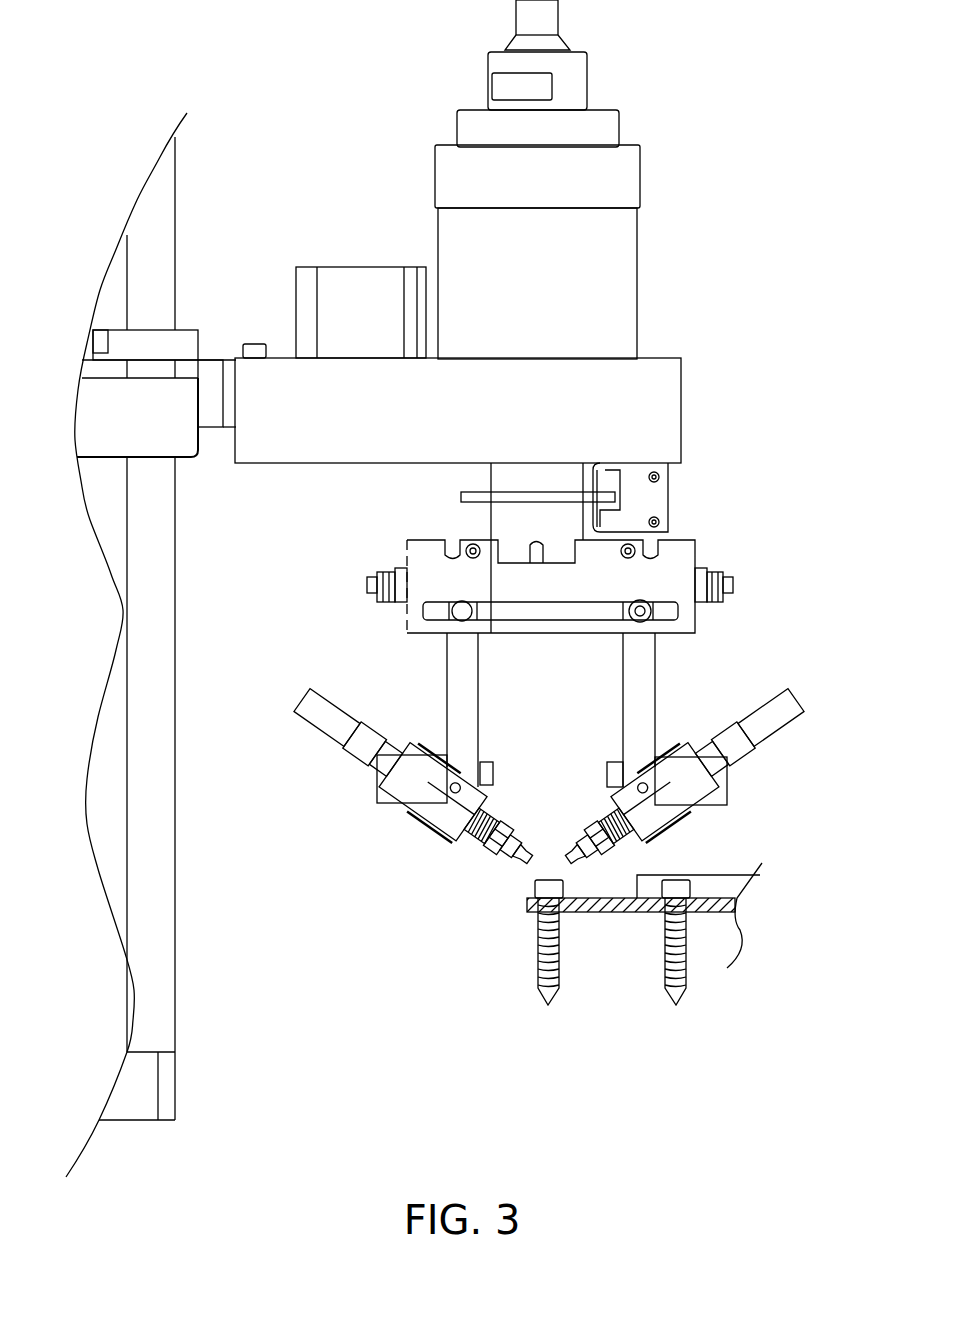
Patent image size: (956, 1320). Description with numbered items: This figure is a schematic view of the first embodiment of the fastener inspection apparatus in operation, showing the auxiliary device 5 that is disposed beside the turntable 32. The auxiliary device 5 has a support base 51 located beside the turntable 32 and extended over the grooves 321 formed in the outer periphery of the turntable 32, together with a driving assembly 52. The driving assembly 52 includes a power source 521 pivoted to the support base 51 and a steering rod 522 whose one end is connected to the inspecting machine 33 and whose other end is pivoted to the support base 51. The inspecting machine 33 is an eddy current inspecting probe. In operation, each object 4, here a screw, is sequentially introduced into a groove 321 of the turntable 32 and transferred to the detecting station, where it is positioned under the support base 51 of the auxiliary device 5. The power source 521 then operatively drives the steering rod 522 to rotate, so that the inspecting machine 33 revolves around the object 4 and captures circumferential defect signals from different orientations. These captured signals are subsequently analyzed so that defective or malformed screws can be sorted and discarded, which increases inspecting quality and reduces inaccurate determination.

The auxiliary device 5 is at (148, 181).
The support base 51 is at (667, 427).
The driving assembly 52 is at (518, 179).
The power source 521 is at (472, 253).
The steering rod 522 is at (638, 692).
The inspecting machine 33 is at (698, 800).
The turntable 32 is at (602, 950).
The groove 321 is at (540, 905).
The object 4 is at (545, 955).